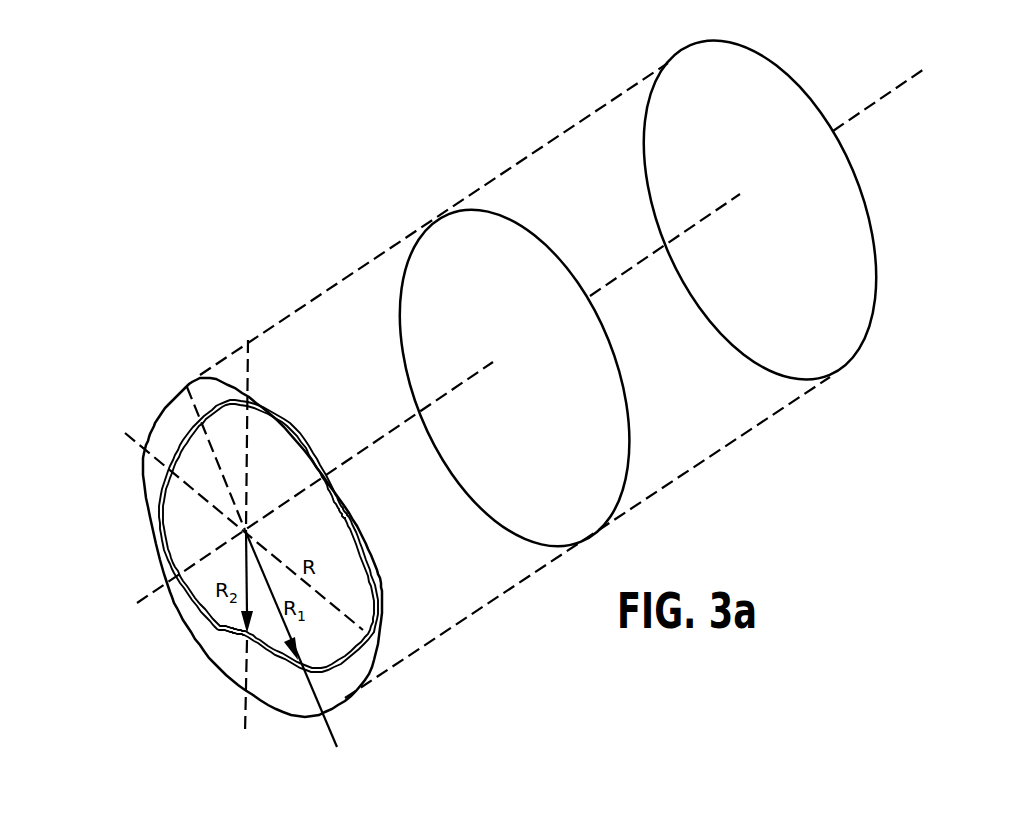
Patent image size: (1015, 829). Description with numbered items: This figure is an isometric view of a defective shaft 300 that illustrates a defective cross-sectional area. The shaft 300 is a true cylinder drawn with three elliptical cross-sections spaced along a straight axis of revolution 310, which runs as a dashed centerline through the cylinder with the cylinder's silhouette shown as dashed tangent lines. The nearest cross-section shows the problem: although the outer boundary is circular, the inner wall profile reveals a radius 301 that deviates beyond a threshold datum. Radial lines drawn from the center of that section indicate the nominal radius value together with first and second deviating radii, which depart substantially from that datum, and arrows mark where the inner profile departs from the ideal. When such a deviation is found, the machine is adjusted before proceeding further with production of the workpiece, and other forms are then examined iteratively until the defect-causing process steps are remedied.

The defective shaft 300 is at (743, 432).
The axis of revolution 310 is at (890, 93).
The radius 301 is at (284, 563).